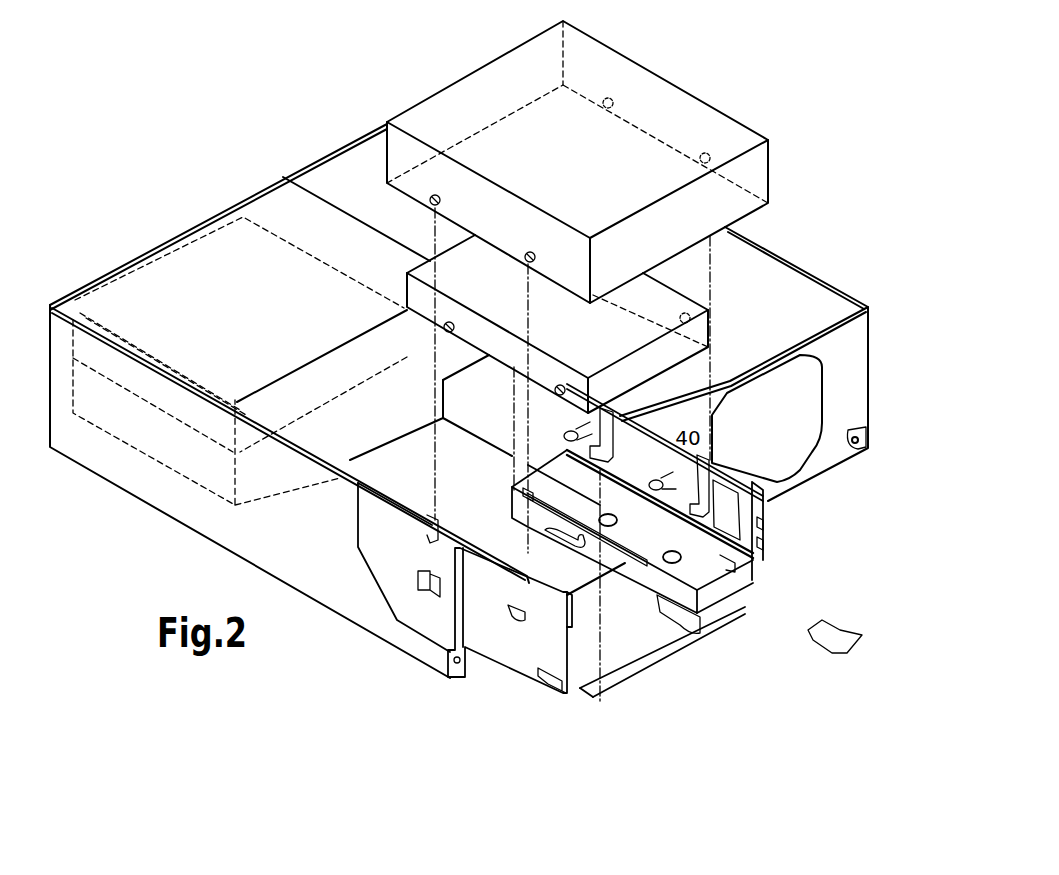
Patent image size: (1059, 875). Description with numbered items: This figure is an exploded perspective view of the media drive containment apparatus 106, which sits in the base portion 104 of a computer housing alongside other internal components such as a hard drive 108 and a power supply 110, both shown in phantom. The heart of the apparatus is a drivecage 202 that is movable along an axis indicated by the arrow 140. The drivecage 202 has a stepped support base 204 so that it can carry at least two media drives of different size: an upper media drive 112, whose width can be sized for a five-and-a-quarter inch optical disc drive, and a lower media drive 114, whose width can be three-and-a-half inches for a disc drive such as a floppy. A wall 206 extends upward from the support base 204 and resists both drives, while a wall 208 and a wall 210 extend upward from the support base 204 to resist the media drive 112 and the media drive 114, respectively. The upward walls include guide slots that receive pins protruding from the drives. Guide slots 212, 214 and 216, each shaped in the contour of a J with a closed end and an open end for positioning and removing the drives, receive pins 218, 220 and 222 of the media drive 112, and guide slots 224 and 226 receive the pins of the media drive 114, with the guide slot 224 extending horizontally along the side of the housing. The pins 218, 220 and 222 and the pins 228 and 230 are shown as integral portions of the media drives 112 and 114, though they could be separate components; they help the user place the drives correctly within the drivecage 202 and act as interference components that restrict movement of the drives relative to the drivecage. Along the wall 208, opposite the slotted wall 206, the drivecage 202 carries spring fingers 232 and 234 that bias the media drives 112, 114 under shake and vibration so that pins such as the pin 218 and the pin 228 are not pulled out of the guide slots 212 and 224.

The base portion 104 is at (137, 472).
The media drive containment apparatus 106 is at (490, 778).
The hard drive 108 is at (110, 413).
The power supply 110 is at (167, 295).
The media drive 112 is at (450, 104).
The media drive 114 is at (423, 272).
The arrow 140 is at (815, 637).
The drivecage 202 is at (734, 712).
The support base 204 is at (612, 647).
The wall 206 is at (538, 648).
The wall 208 is at (767, 520).
The wall 210 is at (740, 615).
The guide slot 212 is at (522, 615).
The guide slot 214 is at (667, 427).
The guide slot 216 is at (712, 468).
The pin 218 is at (530, 257).
The pin 220 is at (613, 103).
The pin 222 is at (710, 157).
The guide slot 224 is at (548, 692).
The guide slot 226 is at (680, 632).
The pin 228 is at (560, 390).
The pin 230 is at (684, 316).
The spring finger 232 is at (560, 440).
The spring finger 234 is at (657, 482).